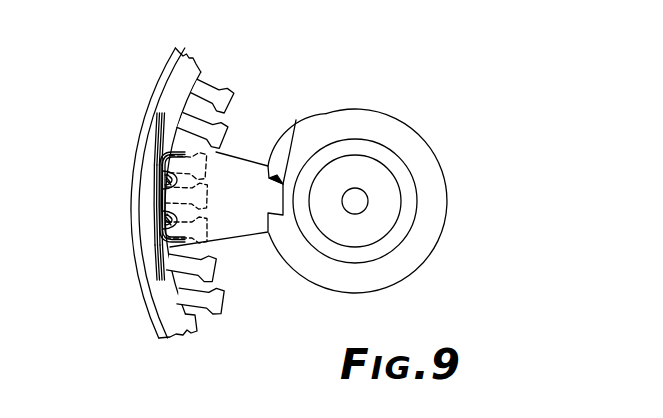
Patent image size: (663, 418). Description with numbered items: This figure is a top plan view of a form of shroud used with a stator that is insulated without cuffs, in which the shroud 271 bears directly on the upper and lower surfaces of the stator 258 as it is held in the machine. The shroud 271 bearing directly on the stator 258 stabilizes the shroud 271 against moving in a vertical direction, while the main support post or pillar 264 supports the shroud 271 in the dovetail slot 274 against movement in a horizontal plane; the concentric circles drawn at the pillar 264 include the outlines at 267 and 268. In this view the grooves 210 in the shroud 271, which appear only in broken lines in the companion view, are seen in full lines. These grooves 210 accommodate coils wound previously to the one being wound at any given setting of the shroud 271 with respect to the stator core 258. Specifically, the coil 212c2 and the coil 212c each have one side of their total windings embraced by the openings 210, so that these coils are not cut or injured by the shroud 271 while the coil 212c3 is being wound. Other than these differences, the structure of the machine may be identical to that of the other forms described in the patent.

The stator 258 is at (190, 60).
The coil 212c2 is at (158, 137).
The grooves 210 is at (161, 182).
The coil 212c3 is at (158, 208).
The coil 212c is at (158, 262).
The shroud 271 is at (243, 163).
The dovetail slot 274 is at (296, 120).
The main support post or pillar 264 is at (373, 114).
The hub 267 is at (375, 173).
The rim 268 is at (403, 178).